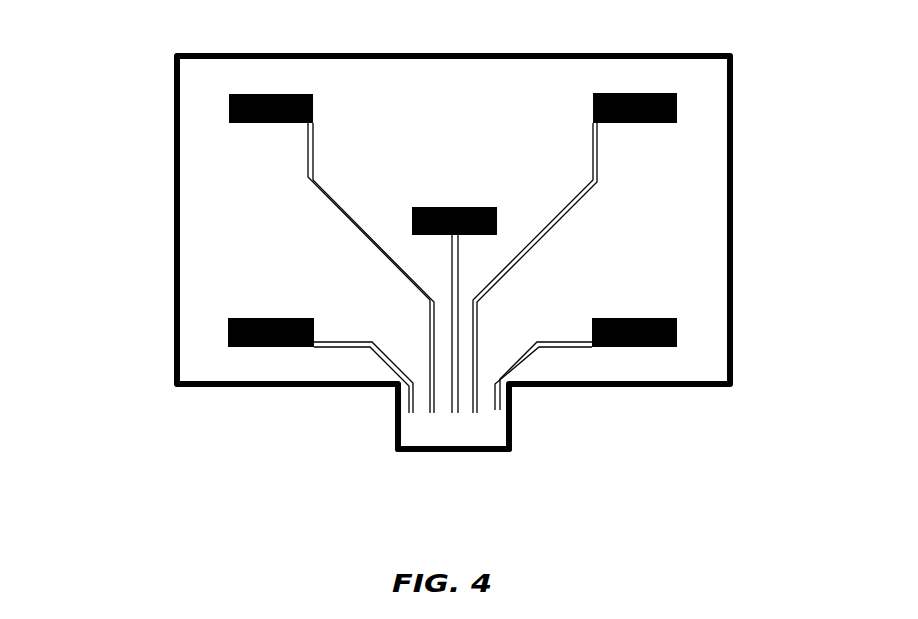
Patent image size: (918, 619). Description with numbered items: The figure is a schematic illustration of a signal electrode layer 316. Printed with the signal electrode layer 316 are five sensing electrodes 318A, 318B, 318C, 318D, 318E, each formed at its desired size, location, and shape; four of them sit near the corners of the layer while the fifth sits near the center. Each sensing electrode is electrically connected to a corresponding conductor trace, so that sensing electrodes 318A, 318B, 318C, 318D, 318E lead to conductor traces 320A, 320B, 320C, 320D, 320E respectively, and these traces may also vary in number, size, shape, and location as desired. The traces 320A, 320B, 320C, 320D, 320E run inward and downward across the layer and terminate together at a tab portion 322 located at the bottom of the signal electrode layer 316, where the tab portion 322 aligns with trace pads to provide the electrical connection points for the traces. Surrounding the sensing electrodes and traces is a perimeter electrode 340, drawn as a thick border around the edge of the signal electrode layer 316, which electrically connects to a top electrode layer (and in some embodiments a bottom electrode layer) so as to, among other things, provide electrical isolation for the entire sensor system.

The signal electrode layer 316 is at (705, 220).
The sensing electrode 318A is at (235, 118).
The sensing electrode 318B is at (663, 105).
The sensing electrode 318C is at (648, 340).
The sensing electrode 318D is at (228, 336).
The sensing electrode 318E is at (450, 213).
The conductor trace 320A is at (332, 203).
The conductor trace 320B is at (597, 165).
The conductor trace 320C is at (567, 338).
The conductor trace 320D is at (393, 365).
The conductor trace 320E is at (452, 258).
The tab portion 322 is at (413, 437).
The perimeter electrode 340 is at (167, 90).